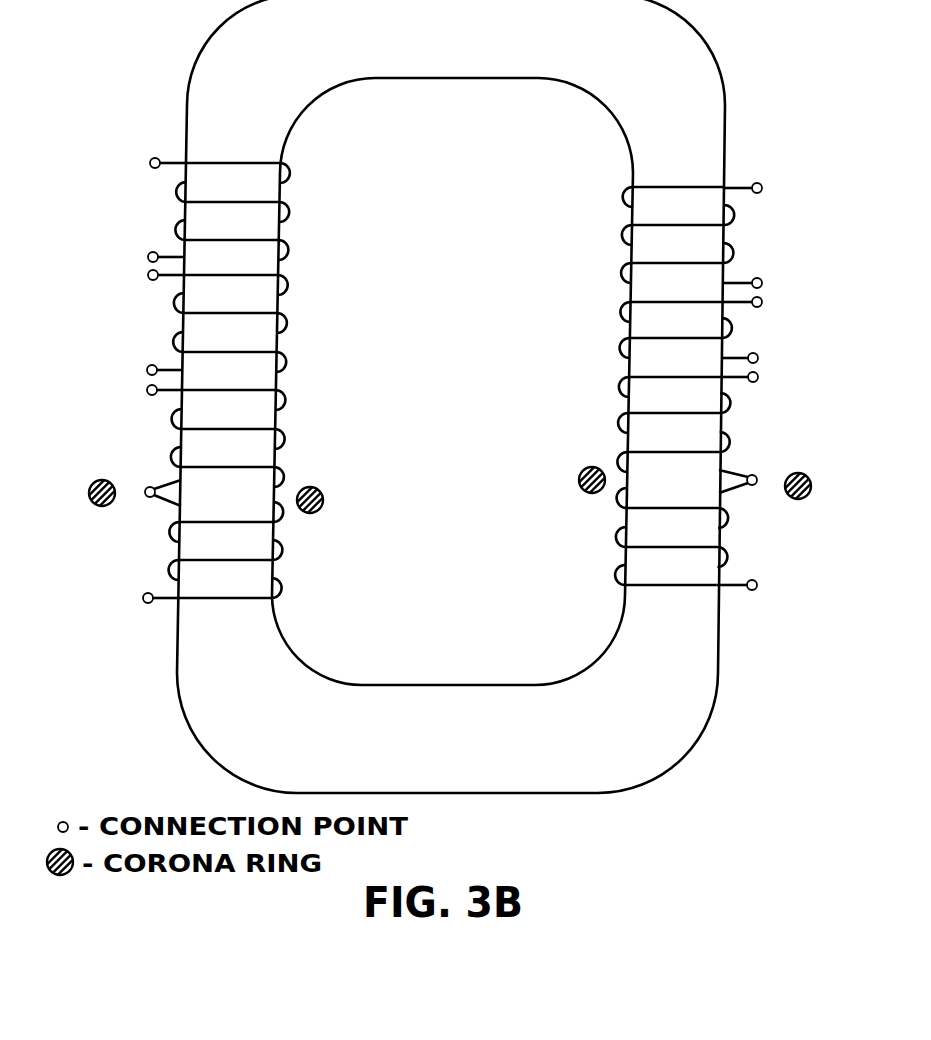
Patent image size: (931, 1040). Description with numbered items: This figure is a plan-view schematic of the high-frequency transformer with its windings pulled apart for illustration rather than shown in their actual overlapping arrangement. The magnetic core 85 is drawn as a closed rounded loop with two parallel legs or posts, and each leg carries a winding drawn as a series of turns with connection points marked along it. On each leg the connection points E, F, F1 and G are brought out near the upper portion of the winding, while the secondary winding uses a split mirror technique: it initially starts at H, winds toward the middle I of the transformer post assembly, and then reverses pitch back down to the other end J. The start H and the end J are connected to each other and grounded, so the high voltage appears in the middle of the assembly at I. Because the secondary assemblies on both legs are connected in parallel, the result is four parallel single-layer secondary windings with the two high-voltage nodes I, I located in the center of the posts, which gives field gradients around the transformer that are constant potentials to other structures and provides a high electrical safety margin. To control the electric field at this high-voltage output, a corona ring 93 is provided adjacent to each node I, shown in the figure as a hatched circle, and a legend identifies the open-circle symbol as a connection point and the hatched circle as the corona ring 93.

The core 85 is at (627, 772).
The corona ring 93 is at (830, 524).
The connection point E is at (460, 177).
The connection point F is at (460, 268).
The connection point F1 is at (461, 291).
The connection point G is at (453, 365).
The secondary winding start H is at (454, 385).
The high-voltage node I is at (144, 486).
The secondary winding end J is at (445, 593).